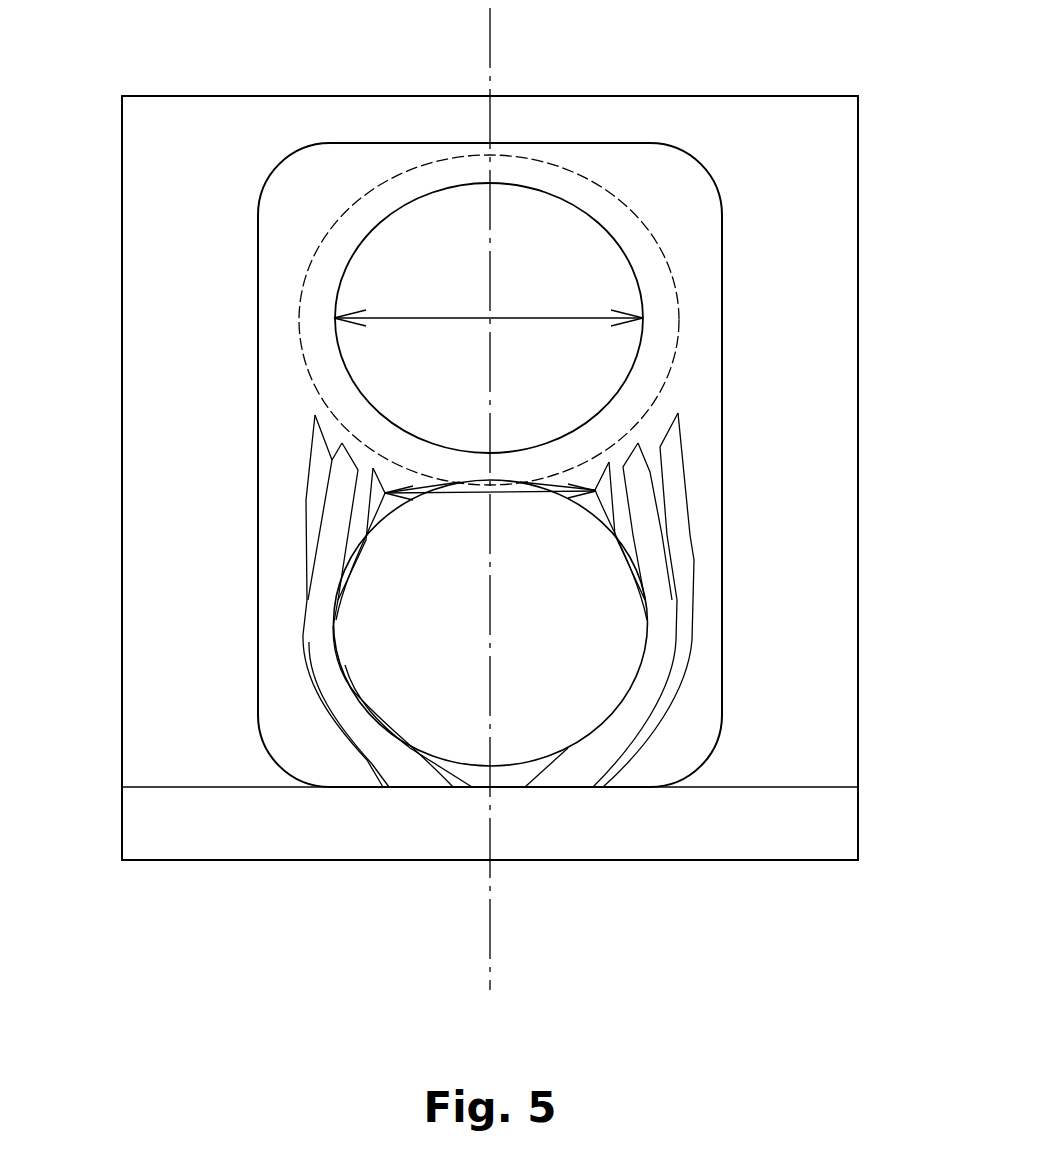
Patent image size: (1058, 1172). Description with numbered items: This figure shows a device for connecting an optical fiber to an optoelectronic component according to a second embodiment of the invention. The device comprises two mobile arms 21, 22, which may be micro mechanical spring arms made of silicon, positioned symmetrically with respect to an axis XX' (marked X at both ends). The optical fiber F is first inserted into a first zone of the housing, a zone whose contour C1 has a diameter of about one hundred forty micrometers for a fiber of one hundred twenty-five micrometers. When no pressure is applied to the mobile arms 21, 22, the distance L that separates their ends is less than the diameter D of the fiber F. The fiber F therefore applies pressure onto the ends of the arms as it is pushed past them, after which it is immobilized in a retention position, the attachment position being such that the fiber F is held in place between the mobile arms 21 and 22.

The mobile arm 21 is at (335, 528).
The mobile arm 22 is at (637, 497).
The optical fiber F is at (417, 235).
The contour C1 is at (320, 243).
The diameter of the fiber D is at (488, 305).
The distance separating the arm ends L is at (490, 507).
The axis X is at (473, 502).